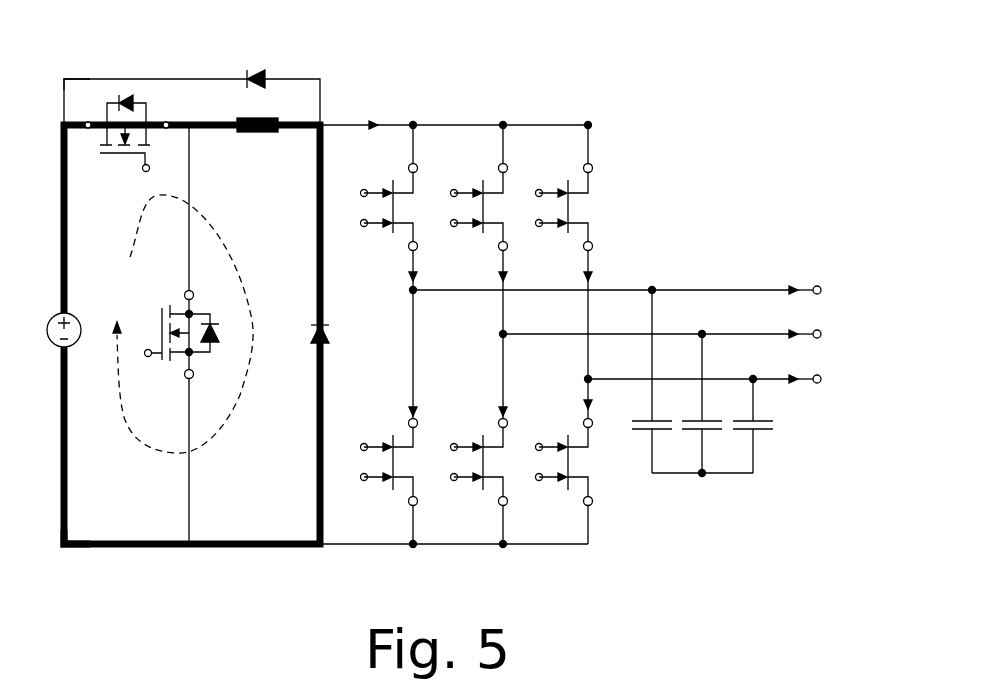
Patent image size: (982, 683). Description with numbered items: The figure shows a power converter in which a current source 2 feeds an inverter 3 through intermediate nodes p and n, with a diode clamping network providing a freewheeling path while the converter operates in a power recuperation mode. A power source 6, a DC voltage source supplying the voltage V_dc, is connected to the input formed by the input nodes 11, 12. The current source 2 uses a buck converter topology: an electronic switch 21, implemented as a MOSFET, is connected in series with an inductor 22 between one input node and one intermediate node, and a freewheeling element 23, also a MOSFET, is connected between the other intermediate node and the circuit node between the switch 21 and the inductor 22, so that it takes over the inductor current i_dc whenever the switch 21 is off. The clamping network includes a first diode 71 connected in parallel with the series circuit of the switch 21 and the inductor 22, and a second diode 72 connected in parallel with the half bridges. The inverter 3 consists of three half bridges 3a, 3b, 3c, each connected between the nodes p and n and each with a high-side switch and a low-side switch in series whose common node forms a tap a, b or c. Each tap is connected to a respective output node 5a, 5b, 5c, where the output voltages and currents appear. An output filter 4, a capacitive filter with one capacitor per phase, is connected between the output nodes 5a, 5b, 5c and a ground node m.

The current source 2 is at (190, 62).
The inverter 3 is at (478, 62).
The first half bridge 3a is at (415, 570).
The second half bridge 3b is at (500, 570).
The third half bridge 3c is at (562, 570).
The output filter 4 is at (718, 280).
The first output node 5a is at (824, 282).
The second output node 5b is at (824, 326).
The third output node 5c is at (823, 371).
The power source 6 is at (52, 316).
The input node 11 is at (73, 67).
The input node 12 is at (73, 559).
The electronic switch 21 is at (122, 205).
The inductor 22 is at (262, 168).
The freewheeling element 23 is at (170, 388).
The first diode 71 is at (305, 62).
The second diode 72 is at (312, 320).